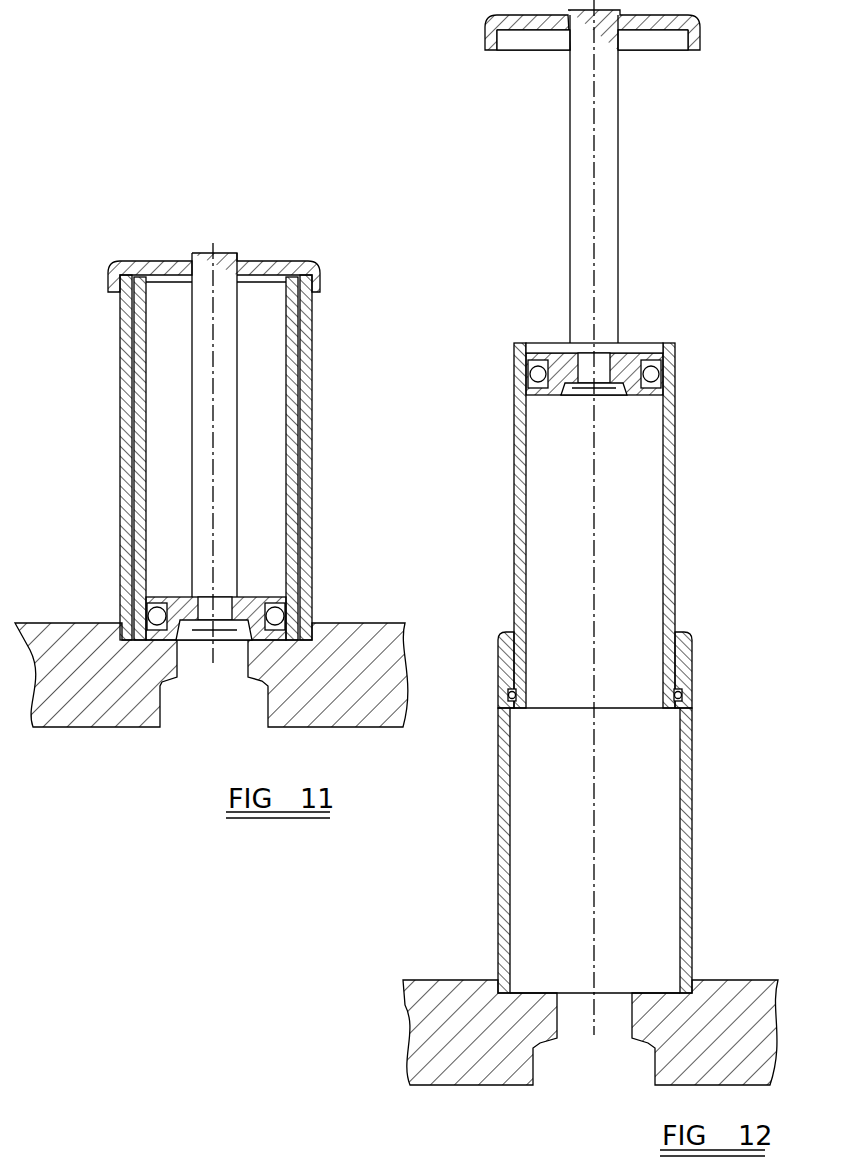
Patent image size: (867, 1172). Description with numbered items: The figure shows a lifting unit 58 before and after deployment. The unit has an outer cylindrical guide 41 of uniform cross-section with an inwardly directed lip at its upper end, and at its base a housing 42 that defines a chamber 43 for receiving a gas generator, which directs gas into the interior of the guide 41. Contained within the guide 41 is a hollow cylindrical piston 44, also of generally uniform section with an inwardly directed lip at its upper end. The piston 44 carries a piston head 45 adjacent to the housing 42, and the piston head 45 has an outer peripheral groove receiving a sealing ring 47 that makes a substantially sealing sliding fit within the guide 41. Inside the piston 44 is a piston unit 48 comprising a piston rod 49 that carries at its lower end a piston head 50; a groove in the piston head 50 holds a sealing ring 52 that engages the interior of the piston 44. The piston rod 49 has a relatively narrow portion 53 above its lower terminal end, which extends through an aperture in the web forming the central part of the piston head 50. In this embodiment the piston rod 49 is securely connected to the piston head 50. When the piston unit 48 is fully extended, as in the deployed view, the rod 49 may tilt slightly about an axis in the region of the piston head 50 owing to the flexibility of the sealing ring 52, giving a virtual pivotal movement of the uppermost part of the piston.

In FIG. 11, the outer cylindrical guide 41 is at (312, 442).
In FIG. 12, the outer cylindrical guide 41 is at (695, 820).
In FIG. 11, the housing 42 is at (388, 626).
In FIG. 12, the housing 42 is at (723, 980).
In FIG. 11, the chamber 43 is at (222, 697).
In FIG. 12, the chamber 43 is at (612, 1062).
In FIG. 11, the hollow cylindrical piston 44 is at (292, 490).
In FIG. 12, the hollow cylindrical piston 44 is at (675, 568).
In FIG. 11, the piston head 45 is at (297, 598).
In FIG. 12, the piston head 45 is at (690, 663).
In FIG. 12, the sealing ring 47 is at (690, 700).
In FIG. 11, the piston unit 48 is at (238, 332).
In FIG. 12, the piston unit 48 is at (570, 183).
In FIG. 11, the piston rod 49 is at (228, 408).
In FIG. 12, the piston rod 49 is at (620, 228).
In FIG. 11, the piston head 50 is at (268, 608).
In FIG. 12, the piston head 50 is at (635, 356).
In FIG. 12, the sealing ring 52 is at (658, 376).
In FIG. 12, the narrow portion 53 is at (612, 392).
In FIG. 11, the lifting unit 58 is at (82, 458).
In FIG. 12, the lifting unit 58 is at (723, 520).